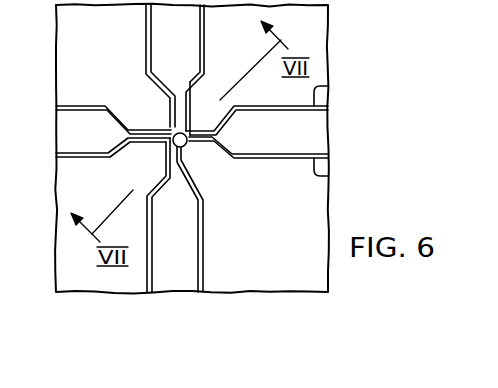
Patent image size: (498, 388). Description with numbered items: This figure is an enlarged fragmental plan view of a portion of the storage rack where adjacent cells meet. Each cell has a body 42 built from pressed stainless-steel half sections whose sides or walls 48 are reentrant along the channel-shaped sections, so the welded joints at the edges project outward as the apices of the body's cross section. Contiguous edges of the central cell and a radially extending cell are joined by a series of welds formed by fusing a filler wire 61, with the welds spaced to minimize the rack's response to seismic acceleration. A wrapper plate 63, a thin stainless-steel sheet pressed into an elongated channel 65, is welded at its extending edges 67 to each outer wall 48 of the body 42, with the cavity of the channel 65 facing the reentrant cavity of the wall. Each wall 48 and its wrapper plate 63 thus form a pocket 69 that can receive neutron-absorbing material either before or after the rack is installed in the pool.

The body 42 is at (146, 29).
The wall 48 is at (331, 90).
The filler wire 61 is at (176, 133).
The wrapper plate 63 is at (330, 180).
The channel 65 is at (262, 154).
The extending edges 67 is at (179, 162).
The pocket 69 is at (82, 134).